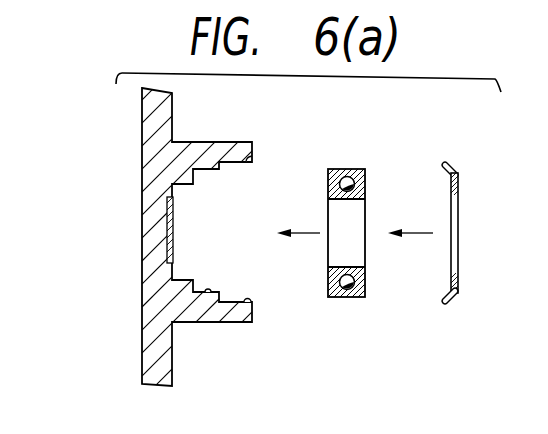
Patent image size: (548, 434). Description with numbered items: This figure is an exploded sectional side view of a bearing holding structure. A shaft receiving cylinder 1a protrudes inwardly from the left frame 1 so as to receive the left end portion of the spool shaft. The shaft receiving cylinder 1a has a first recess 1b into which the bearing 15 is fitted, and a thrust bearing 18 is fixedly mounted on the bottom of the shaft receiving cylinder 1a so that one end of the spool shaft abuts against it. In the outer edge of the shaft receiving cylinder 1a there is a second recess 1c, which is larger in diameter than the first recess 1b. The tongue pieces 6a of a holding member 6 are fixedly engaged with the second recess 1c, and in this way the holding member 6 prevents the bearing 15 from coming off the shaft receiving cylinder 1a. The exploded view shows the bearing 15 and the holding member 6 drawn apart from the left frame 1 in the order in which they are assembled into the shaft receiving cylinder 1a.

The left frame 1 is at (128, 153).
The shaft receiving cylinder 1a is at (224, 142).
The first recess 1b is at (211, 292).
The second recess 1c is at (249, 296).
The thrust bearing 18 is at (170, 226).
The bearing 15 is at (350, 169).
The holding member 6 is at (470, 167).
The tongue pieces 6a is at (450, 304).